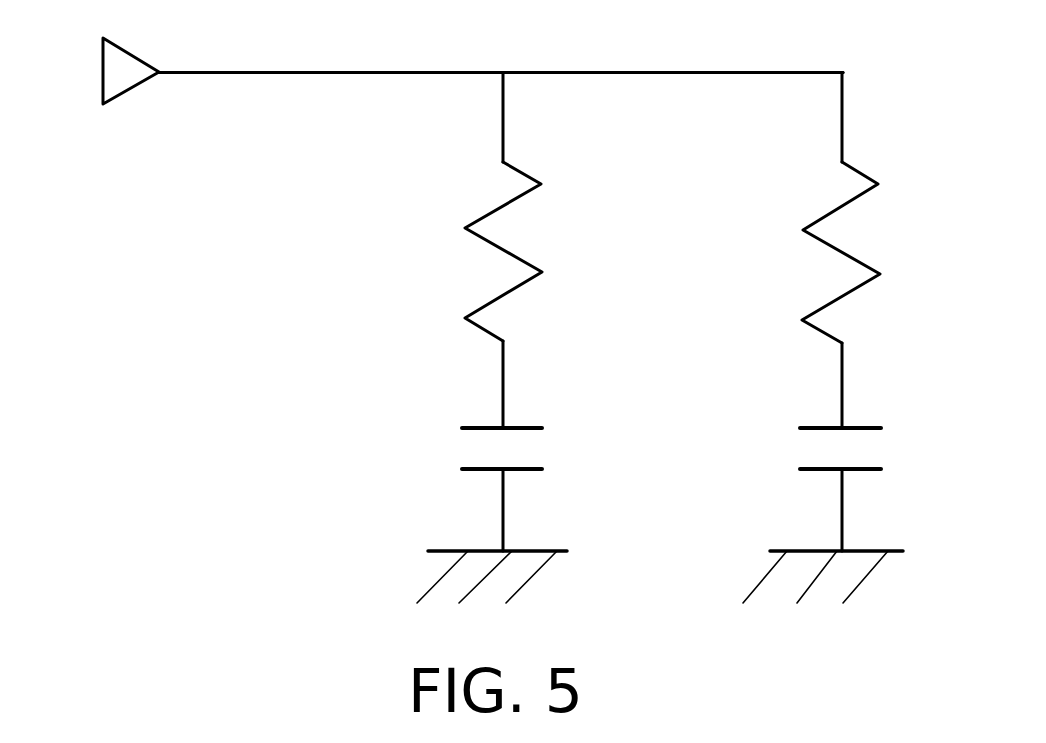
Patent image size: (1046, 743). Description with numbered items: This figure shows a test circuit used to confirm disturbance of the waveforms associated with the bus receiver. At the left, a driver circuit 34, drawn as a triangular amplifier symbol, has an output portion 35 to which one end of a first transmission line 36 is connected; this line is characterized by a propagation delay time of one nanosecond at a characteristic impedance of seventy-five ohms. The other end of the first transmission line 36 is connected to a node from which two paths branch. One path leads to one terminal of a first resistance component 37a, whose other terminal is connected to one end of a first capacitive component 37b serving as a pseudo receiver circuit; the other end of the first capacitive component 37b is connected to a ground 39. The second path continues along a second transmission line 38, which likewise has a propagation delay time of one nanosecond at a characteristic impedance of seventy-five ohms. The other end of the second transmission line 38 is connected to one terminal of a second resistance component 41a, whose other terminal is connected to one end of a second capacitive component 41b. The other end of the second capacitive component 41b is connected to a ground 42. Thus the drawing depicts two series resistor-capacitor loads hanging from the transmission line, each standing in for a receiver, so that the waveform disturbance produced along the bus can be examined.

The driver circuit 34 is at (128, 92).
The output portion 35 is at (161, 74).
The first transmission line 36 is at (495, 60).
The first resistance component 37a is at (482, 262).
The first capacitive component 37b is at (466, 447).
The second transmission line 38 is at (846, 65).
The ground 39 is at (524, 551).
The second resistance component 41a is at (835, 258).
The second capacitive component 41b is at (805, 446).
The ground 42 is at (855, 551).